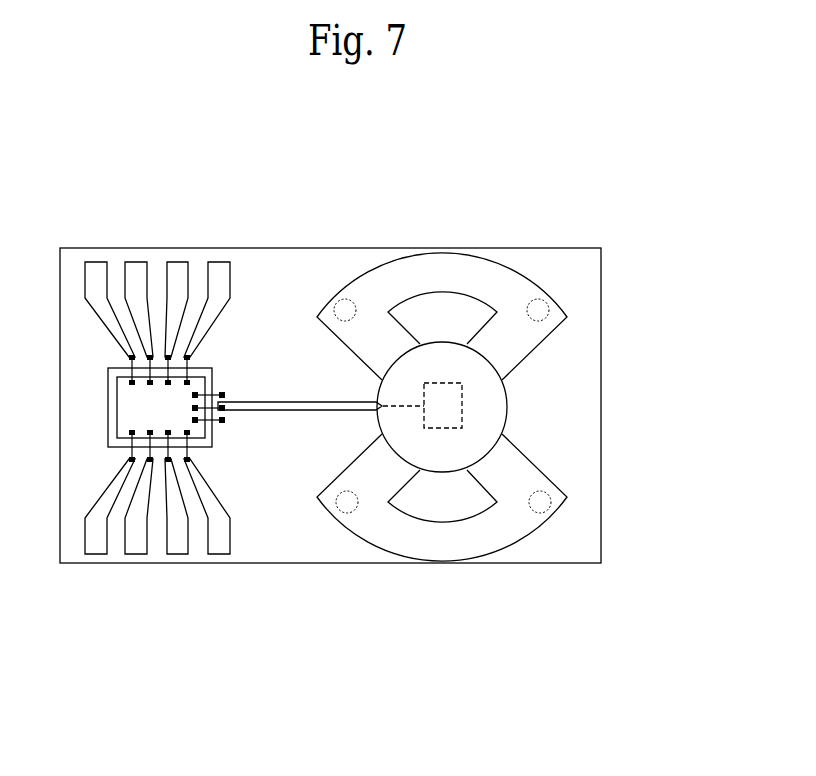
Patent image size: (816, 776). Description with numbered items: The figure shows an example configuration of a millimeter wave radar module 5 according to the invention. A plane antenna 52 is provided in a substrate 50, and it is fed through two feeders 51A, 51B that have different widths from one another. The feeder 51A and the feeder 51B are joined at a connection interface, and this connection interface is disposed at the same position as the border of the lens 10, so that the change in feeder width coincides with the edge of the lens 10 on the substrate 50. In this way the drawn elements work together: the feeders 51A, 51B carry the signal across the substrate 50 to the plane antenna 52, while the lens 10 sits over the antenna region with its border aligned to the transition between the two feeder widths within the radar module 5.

The millimeter wave radar module 5 is at (74, 170).
The lens 10 is at (442, 355).
The substrate 50 is at (567, 262).
The feeder 51A is at (403, 407).
The feeder 51B is at (268, 410).
The plane antenna 52 is at (445, 398).